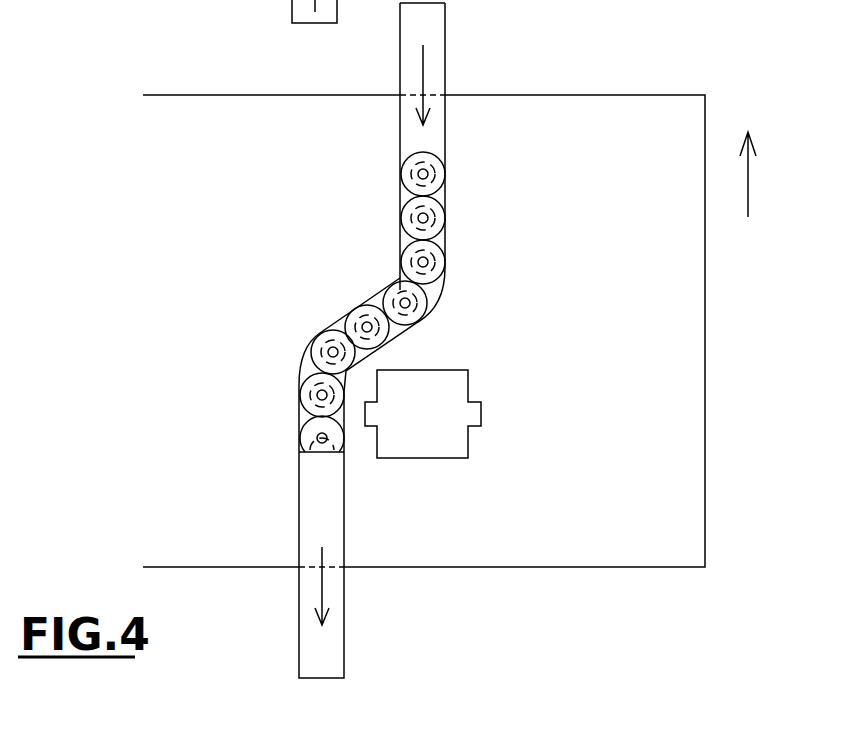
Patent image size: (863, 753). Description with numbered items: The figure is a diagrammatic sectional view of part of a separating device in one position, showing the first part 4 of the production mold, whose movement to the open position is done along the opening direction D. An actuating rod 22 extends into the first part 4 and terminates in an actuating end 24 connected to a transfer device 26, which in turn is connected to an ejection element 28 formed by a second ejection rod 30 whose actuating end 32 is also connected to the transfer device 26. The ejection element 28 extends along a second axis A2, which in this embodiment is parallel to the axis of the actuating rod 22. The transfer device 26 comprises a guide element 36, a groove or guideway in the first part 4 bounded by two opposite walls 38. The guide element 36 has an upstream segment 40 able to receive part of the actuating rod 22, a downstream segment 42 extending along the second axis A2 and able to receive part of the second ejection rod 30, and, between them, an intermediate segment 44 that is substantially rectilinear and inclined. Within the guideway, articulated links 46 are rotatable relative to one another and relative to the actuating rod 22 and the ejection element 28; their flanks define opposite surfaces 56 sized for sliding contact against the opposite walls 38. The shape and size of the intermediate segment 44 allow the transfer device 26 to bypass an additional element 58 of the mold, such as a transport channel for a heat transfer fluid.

The first part 4 is at (660, 330).
The actuating rod 22 is at (384, 531).
The actuating end 24 is at (345, 440).
The transfer device 26 is at (393, 288).
The ejection element 28 is at (498, 145).
The second ejection rod 30 is at (498, 145).
The actuating end 32 is at (445, 152).
The guide element 36 is at (432, 293).
The opposite walls 38 is at (447, 205).
The upstream segment 40 is at (328, 510).
The downstream segment 42 is at (430, 140).
The intermediate segment 44 is at (305, 370).
The articulated links 46 is at (432, 176).
The opposite surfaces 56 is at (447, 262).
The additional element 58 is at (456, 384).
The second axis A2 is at (425, 75).
The opening direction D is at (748, 187).